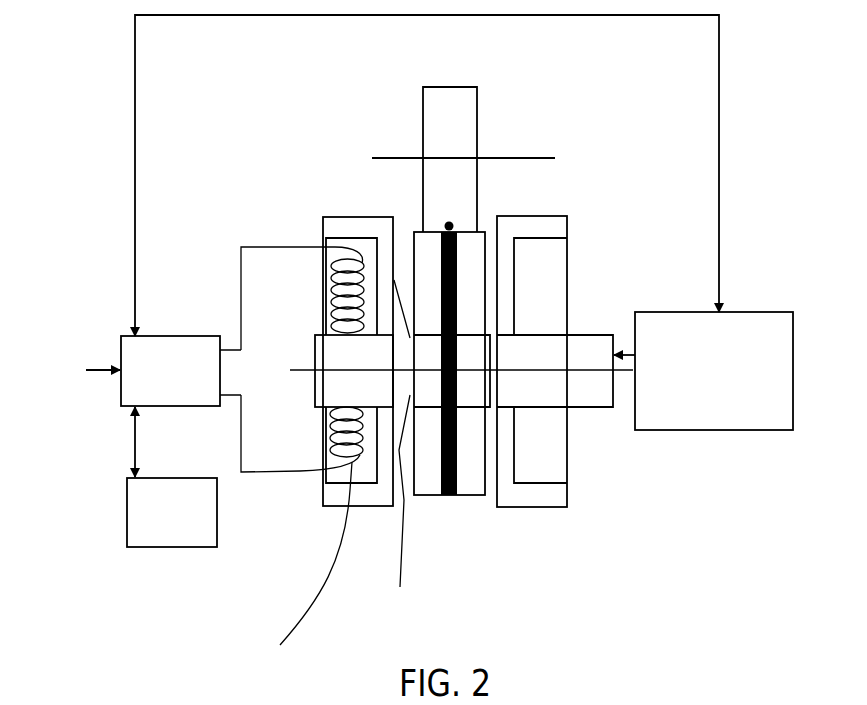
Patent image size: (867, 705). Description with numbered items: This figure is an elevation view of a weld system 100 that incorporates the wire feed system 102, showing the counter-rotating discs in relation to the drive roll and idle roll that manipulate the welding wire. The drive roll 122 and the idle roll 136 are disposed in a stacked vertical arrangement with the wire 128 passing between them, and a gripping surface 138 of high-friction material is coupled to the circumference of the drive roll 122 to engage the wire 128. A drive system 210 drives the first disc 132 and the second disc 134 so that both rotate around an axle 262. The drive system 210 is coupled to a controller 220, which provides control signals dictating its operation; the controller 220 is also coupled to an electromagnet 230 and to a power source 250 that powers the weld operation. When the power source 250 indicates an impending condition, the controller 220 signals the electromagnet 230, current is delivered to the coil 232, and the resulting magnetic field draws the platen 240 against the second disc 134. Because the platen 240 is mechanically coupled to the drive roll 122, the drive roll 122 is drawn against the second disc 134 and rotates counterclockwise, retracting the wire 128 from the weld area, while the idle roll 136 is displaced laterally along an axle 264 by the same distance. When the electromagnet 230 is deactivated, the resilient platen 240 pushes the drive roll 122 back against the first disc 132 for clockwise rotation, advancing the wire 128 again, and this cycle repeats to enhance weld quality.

The weld system 100 is at (789, 71).
The wire feed system 102 is at (366, 79).
The drive roll 122 is at (477, 260).
The wire 128 is at (449, 226).
The first disc 132 is at (562, 222).
The second disc 134 is at (352, 228).
The idle roll 136 is at (440, 113).
The gripping surface 138 is at (450, 495).
The drive system 210 is at (790, 307).
The controller 220 is at (121, 346).
The electromagnet 230 is at (330, 428).
The coil 232 is at (300, 560).
The platen 240 is at (398, 445).
The power source 250 is at (127, 487).
The axle 262 is at (308, 362).
The axle 264 is at (378, 158).